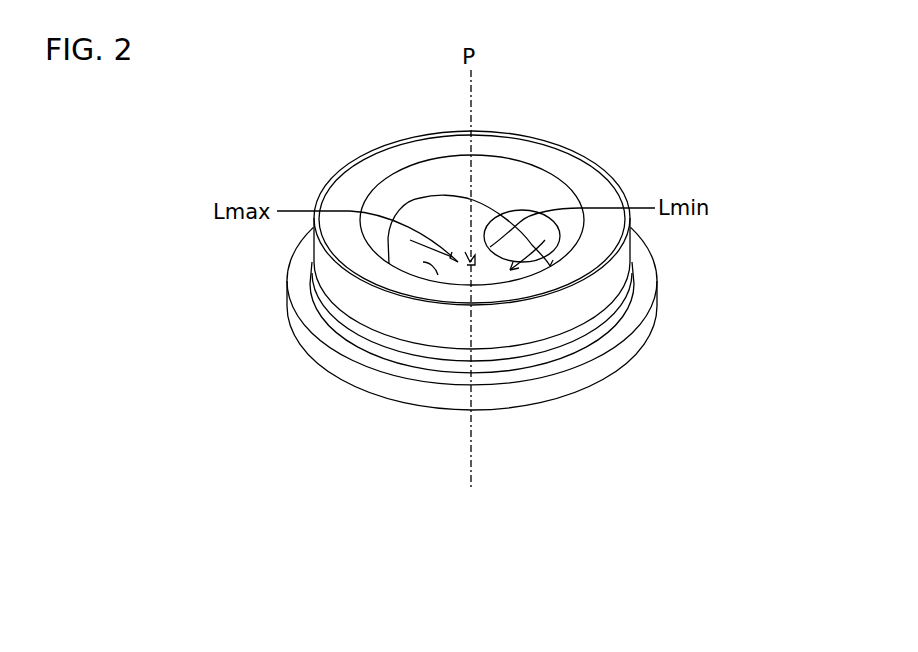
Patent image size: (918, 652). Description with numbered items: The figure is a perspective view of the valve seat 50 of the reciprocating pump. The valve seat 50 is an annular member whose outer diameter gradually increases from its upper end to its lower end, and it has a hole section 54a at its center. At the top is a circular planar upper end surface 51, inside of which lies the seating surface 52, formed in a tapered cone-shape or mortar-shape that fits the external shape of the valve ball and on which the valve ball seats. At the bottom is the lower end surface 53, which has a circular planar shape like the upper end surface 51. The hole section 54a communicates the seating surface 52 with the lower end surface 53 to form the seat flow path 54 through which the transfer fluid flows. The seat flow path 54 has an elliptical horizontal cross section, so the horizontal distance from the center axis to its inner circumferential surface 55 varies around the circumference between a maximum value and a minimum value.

The valve seat 50 is at (680, 155).
The upper end surface 51 is at (553, 158).
The seating surface 52 is at (398, 188).
The lower end surface 53 is at (530, 406).
The seat flow path 54 is at (545, 243).
The hole section 54a is at (455, 243).
The inner circumferential surface 55 is at (450, 217).